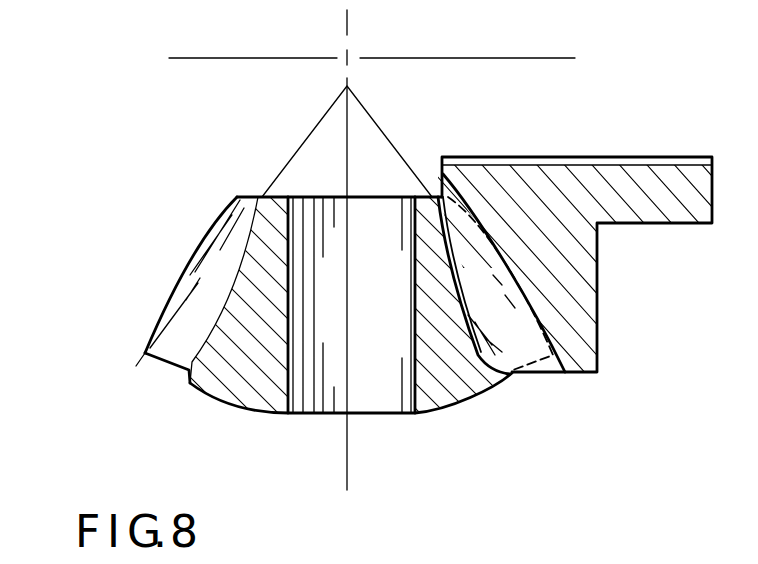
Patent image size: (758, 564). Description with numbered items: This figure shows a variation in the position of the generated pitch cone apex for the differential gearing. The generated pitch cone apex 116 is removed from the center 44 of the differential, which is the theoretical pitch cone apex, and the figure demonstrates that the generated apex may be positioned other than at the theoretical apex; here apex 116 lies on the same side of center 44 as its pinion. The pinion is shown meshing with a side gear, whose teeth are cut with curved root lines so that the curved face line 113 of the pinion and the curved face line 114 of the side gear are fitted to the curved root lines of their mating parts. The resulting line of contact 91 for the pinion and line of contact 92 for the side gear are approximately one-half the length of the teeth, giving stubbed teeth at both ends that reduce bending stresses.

The theoretical pitch cone apex 44 is at (345, 56).
The generated pitch cone apex 116 is at (347, 86).
The line of contact for the pinions 91 is at (208, 242).
The curved face line of the pinion 113 is at (158, 312).
The curved face line of the side gear 114 is at (463, 270).
The line of contact for the side gears 92 is at (500, 338).